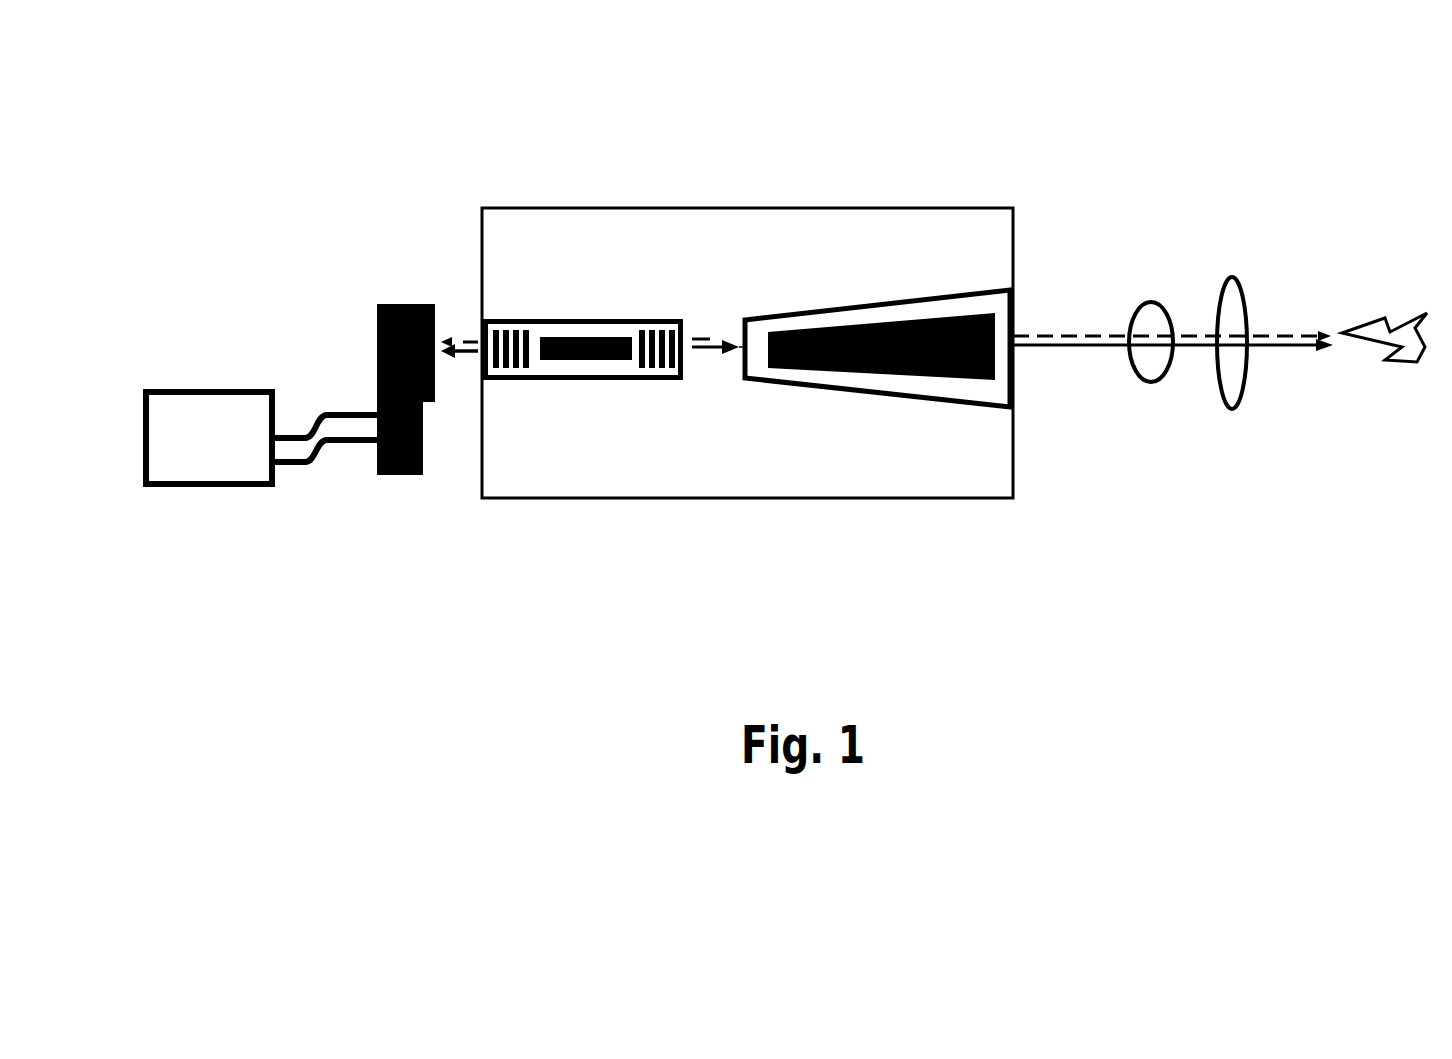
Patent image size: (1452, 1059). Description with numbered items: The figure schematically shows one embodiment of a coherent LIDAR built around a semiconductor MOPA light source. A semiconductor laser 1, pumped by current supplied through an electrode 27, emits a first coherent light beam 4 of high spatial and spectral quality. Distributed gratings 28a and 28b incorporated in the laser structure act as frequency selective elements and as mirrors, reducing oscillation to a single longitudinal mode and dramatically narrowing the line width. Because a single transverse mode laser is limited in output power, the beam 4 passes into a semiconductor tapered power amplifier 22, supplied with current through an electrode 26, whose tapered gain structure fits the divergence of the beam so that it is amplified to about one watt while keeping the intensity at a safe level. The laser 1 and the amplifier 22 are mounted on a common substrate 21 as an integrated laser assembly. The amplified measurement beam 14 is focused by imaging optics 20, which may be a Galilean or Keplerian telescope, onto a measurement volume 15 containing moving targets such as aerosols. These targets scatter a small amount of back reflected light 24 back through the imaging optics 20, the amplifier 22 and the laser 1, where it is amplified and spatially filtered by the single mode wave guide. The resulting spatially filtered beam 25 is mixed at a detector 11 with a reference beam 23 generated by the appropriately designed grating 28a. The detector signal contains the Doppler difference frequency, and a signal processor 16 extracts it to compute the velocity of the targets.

The semiconductor laser 1 is at (560, 380).
The first coherent light beam 4 is at (712, 352).
The detector 11 is at (378, 355).
The measurement beam 14 is at (1092, 346).
The measurement volume 15 is at (1410, 362).
The signal processor 16 is at (203, 488).
The imaging optics 20 is at (1188, 302).
The substrate 21 is at (712, 498).
The semiconductor tapered power amplifier 22 is at (952, 398).
The reference beam 23 is at (462, 356).
The back reflected light 24 is at (1056, 333).
The spatially filtered beam 25 is at (463, 338).
The electrode 26 is at (868, 323).
The electrode 27 is at (583, 336).
The distributed grating 28a is at (502, 332).
The distributed grating 28b is at (667, 335).